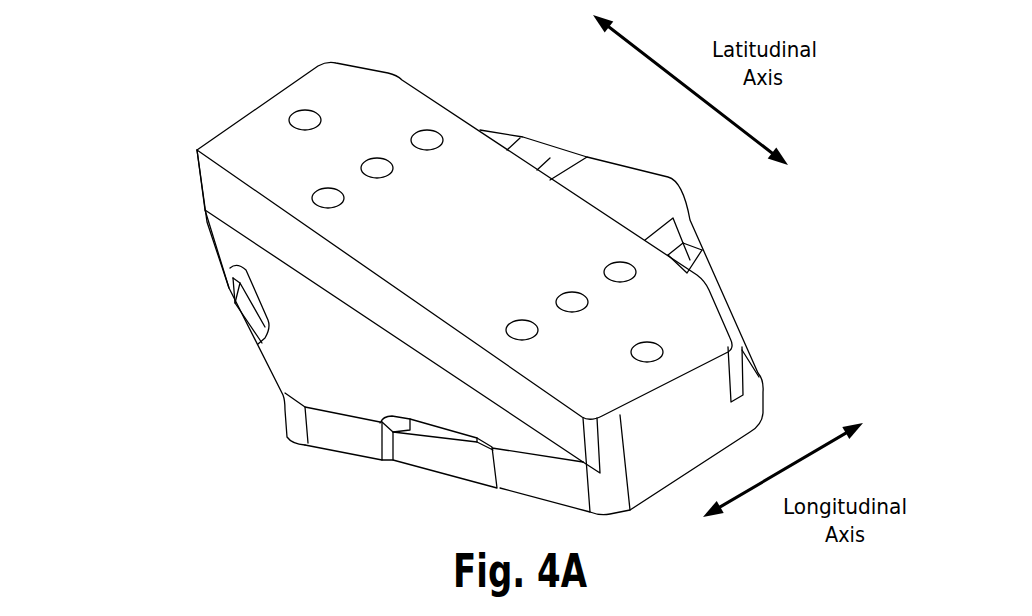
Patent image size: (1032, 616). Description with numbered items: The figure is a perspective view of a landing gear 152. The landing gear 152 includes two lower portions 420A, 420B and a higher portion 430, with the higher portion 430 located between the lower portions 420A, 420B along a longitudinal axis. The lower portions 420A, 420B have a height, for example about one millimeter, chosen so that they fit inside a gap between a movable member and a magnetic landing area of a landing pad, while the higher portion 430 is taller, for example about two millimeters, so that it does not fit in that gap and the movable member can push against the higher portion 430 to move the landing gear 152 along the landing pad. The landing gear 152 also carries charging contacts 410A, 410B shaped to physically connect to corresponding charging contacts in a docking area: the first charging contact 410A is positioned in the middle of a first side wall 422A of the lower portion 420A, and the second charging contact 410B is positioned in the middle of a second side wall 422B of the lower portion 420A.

The landing gear 152 is at (98, 55).
The higher portion 430 is at (491, 250).
The lower portion 420A is at (373, 367).
The lower portion 420B is at (645, 205).
The first charging contact 410A is at (242, 322).
The second charging contact 410B is at (437, 468).
The first side wall 422A is at (217, 257).
The second side wall 422B is at (345, 442).